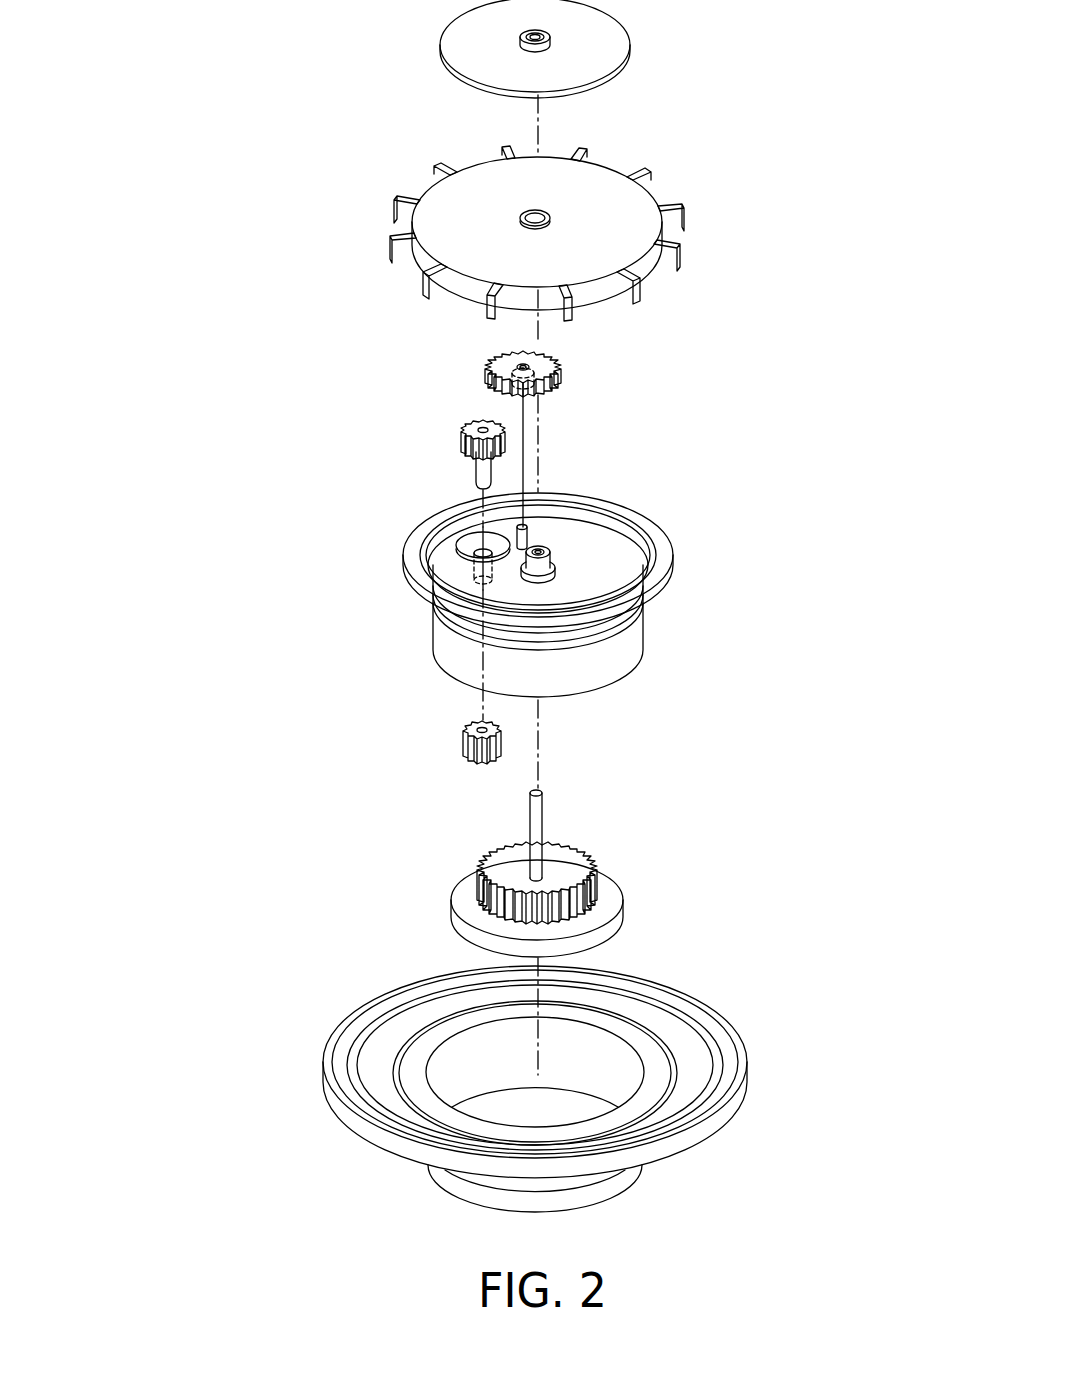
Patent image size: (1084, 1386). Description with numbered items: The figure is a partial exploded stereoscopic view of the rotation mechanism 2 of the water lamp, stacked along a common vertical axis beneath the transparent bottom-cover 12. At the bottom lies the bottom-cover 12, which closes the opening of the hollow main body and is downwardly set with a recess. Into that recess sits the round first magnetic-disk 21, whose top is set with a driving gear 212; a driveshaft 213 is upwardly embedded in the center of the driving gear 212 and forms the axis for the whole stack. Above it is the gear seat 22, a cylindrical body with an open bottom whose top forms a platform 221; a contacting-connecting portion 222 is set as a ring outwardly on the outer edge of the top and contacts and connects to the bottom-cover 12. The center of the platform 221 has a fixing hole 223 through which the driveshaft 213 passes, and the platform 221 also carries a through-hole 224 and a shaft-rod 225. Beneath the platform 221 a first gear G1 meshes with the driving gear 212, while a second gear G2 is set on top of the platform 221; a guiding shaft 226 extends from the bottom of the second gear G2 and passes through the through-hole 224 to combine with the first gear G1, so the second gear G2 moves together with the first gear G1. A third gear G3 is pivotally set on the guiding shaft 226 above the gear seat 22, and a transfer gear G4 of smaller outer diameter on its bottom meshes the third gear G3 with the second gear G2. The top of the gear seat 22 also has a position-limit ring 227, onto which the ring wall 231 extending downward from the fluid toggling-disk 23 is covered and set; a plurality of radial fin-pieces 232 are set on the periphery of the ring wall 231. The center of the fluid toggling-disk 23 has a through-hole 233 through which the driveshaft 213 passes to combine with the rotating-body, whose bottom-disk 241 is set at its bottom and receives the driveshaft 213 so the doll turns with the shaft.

The rotation mechanism 2 is at (322, 152).
The bottom-cover 12 is at (748, 1076).
The first magnetic-disk 21 is at (566, 873).
The driving gear 212 is at (585, 858).
The driveshaft 213 is at (528, 818).
The gear seat 22 is at (525, 562).
The platform 221 is at (587, 545).
The contacting-connecting portion 222 is at (673, 582).
The fixing hole 223 is at (556, 553).
The through-hole 224 is at (458, 543).
The shaft-rod 225 is at (528, 527).
The guiding shaft 226 is at (476, 477).
The position-limit ring 227 is at (420, 580).
The fluid toggling-disk 23 is at (523, 240).
The ring wall 231 is at (607, 292).
The radial fin-pieces 232 is at (390, 243).
The through-hole 233 is at (548, 213).
The bottom-disk 241 is at (630, 48).
The first gear G1 is at (462, 734).
The second gear G2 is at (458, 438).
The third gear G3 is at (486, 359).
The transfer gear G4 is at (490, 380).